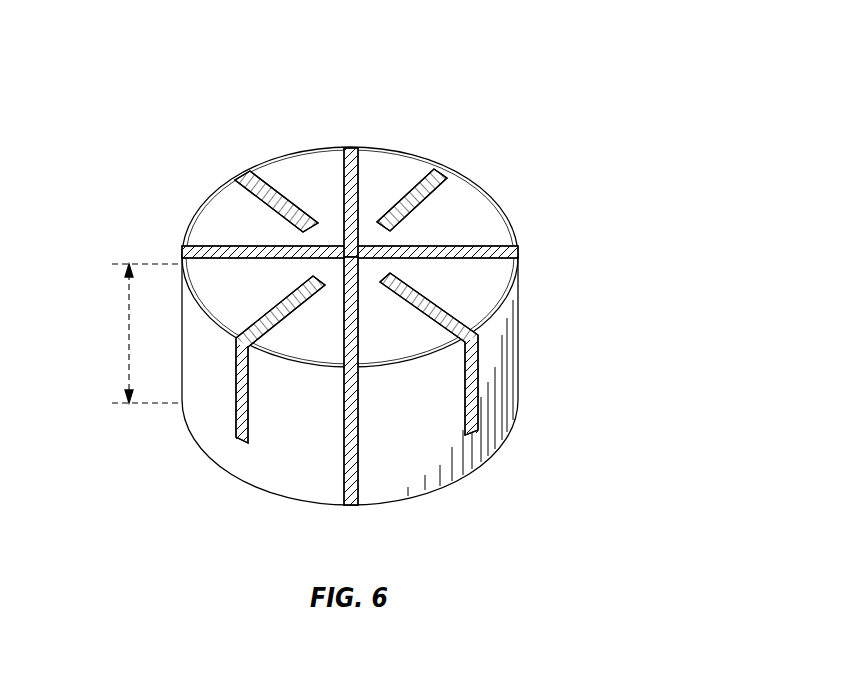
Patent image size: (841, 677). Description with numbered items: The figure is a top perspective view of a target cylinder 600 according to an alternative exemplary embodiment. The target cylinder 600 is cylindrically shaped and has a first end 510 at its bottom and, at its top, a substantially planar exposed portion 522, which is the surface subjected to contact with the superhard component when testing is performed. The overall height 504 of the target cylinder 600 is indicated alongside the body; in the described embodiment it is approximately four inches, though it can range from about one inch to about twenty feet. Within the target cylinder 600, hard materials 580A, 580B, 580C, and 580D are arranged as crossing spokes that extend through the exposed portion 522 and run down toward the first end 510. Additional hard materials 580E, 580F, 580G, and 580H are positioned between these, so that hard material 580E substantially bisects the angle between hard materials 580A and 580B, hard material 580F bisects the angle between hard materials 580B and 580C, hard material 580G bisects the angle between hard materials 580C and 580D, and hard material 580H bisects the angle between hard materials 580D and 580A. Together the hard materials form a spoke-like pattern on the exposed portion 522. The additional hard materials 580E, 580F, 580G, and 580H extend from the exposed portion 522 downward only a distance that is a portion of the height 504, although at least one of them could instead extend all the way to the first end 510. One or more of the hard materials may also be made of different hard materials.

The target cylinder 600 is at (617, 100).
The first end 510 is at (428, 492).
The exposed portion 522 is at (486, 218).
The height 504 is at (128, 336).
The hard material 580A is at (518, 252).
The hard material 580B is at (346, 168).
The hard material 580C is at (186, 245).
The hard material 580D is at (352, 358).
The additional hard material 580E is at (446, 185).
The additional hard material 580F is at (256, 178).
The additional hard material 580G is at (286, 296).
The additional hard material 580H is at (420, 292).